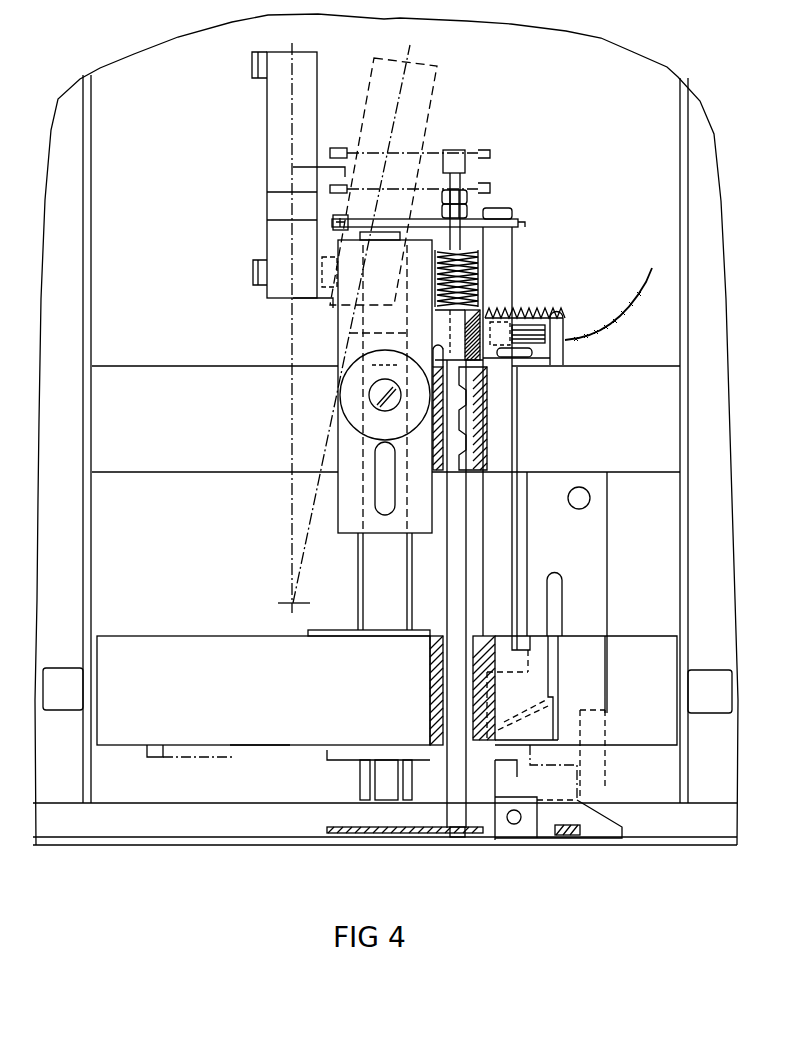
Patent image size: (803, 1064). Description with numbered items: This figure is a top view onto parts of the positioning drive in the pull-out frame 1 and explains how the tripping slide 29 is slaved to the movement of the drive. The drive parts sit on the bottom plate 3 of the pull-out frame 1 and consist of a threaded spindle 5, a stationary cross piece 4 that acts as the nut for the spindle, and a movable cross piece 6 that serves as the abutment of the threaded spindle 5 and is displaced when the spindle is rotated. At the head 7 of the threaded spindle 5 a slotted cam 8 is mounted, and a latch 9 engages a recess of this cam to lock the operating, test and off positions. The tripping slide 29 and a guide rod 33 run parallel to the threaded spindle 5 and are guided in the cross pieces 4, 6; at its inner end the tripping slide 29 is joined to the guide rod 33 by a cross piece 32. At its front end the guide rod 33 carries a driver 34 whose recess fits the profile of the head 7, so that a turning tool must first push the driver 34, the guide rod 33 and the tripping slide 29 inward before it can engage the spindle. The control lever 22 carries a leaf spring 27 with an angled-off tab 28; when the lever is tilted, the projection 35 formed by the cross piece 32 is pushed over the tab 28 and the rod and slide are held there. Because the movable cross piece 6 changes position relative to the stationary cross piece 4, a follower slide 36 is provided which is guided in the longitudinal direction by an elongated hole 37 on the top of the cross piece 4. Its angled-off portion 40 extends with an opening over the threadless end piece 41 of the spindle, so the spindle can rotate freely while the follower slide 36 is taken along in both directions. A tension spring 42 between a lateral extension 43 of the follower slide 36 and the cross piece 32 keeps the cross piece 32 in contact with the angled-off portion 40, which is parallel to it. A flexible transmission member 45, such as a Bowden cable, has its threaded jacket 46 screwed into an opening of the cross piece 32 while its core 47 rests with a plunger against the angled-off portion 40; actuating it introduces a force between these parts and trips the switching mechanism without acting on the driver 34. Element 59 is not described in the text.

The pull-out frame 1 is at (60, 100).
The bottom plate 3 is at (160, 52).
The stationary cross piece 4 is at (153, 370).
The threaded spindle 5 is at (367, 580).
The movable cross piece 6 is at (152, 635).
The head of the threaded spindle 7 is at (360, 782).
The slotted cam 8 is at (325, 752).
The latch 9 is at (165, 758).
The control lever 22 is at (266, 131).
The leaf spring 27 is at (270, 238).
The angled-off tab 28 is at (270, 205).
The tripping slide 29 is at (505, 285).
The cross piece 32 is at (522, 224).
The guide rod 33 is at (456, 595).
The driver 34 is at (322, 822).
The projection 35 is at (335, 222).
The follower slide 36 is at (343, 330).
The elongated hole 37 is at (375, 455).
The angled-off portion 40 is at (342, 240).
The threadless end piece 41 is at (385, 148).
The tension spring 42 is at (478, 273).
The lateral extension 43 is at (452, 332).
The flexible transmission member 45 is at (660, 357).
The jacket 46 is at (613, 318).
The core 47 is at (643, 284).
The bottom plate 59 is at (252, 745).